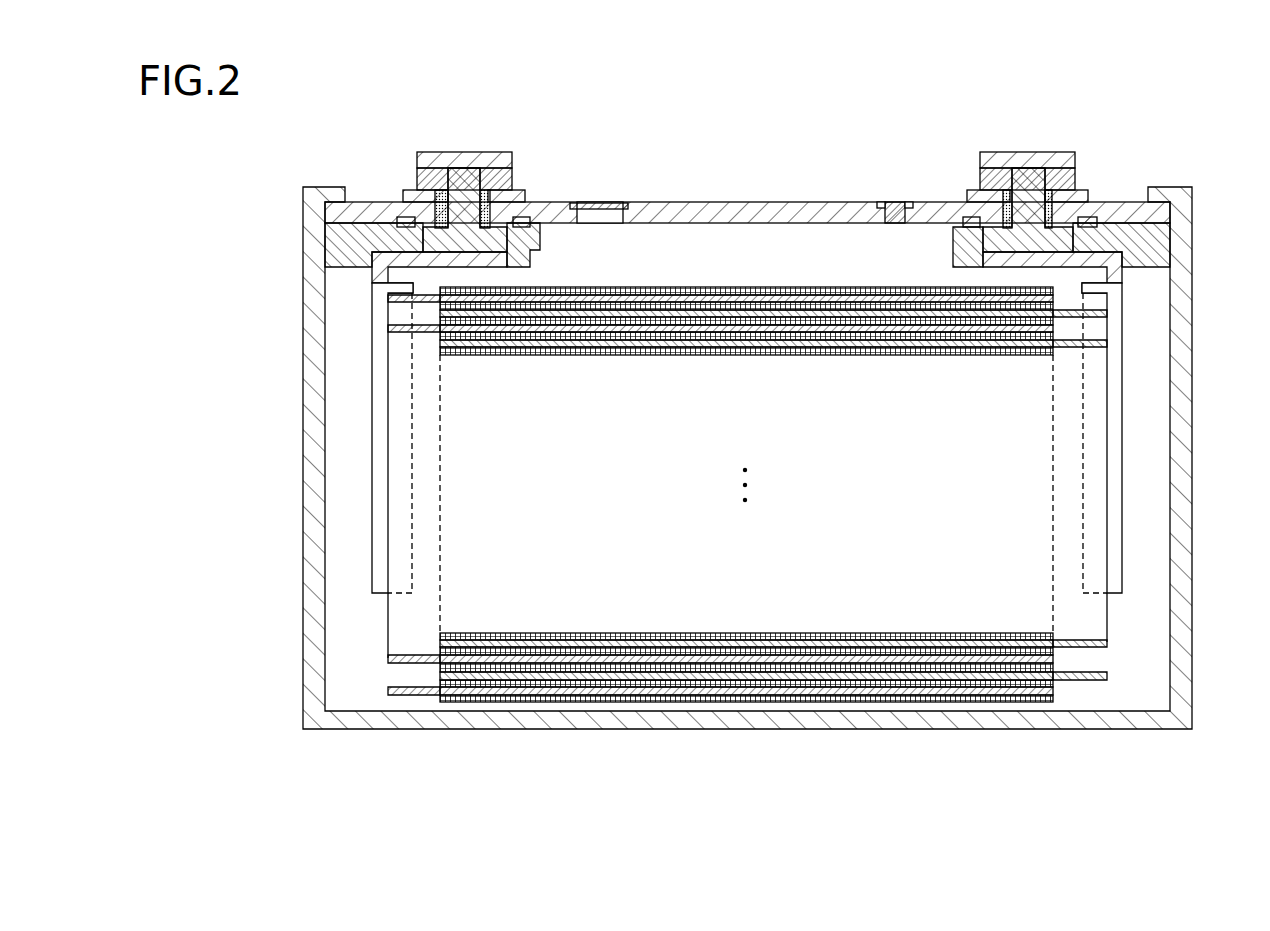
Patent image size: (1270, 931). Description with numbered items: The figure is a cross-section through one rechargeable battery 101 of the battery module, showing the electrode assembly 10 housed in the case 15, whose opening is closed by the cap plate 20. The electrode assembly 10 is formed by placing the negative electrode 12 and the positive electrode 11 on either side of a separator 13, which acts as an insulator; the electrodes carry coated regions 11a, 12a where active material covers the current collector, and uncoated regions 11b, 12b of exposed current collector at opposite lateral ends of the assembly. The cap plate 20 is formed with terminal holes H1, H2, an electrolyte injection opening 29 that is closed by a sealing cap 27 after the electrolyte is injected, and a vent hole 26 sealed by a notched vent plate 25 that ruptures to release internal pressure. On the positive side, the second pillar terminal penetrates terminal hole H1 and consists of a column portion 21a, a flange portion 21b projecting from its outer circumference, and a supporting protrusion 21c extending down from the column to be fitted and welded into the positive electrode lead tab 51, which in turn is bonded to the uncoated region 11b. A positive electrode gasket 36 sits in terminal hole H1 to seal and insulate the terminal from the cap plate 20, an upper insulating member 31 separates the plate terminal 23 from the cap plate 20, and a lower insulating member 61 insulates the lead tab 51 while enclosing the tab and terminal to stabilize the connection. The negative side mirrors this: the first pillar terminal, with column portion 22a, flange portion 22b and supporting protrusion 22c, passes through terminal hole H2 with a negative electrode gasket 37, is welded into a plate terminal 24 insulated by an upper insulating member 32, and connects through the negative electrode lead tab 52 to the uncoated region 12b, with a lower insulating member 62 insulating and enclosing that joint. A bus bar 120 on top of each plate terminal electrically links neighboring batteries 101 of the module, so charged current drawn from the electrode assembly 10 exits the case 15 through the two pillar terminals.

The rechargeable battery 101 is at (735, 178).
The case 15 is at (1186, 390).
The cap plate 20 is at (826, 215).
The lower insulating member 61 is at (340, 240).
The lower insulating member 62 is at (1150, 243).
The flange portion 21b is at (497, 243).
The flange portion 22b is at (993, 242).
The column portion 21a is at (463, 217).
The supporting protrusion 21c is at (470, 232).
The column portion 22a is at (1025, 225).
The supporting protrusion 22c is at (1038, 235).
The plate terminal 23 is at (497, 175).
The plate terminal 24 is at (1068, 175).
The bus bar 120 is at (457, 160).
The upper insulating member 31 is at (412, 190).
The positive electrode gasket 36 is at (427, 215).
The negative electrode gasket 37 is at (1005, 207).
The upper insulating member 32 is at (1088, 193).
The terminal hole H1 is at (440, 190).
The terminal hole H2 is at (1042, 190).
The vent plate 25 is at (628, 202).
The vent hole 26 is at (598, 215).
The sealing cap 27 is at (900, 205).
The electrolyte injection opening 29 is at (888, 202).
The positive electrode lead tab 51 is at (366, 405).
The negative electrode lead tab 52 is at (1130, 557).
The electrode assembly 10 is at (873, 707).
The separator 13 is at (763, 698).
The positive electrode 11 is at (720, 556).
The coated region 11a is at (540, 690).
The uncoated region 11b is at (414, 539).
The negative electrode 12 is at (777, 564).
The coated region 12a is at (978, 675).
The uncoated region 12b is at (1083, 547).